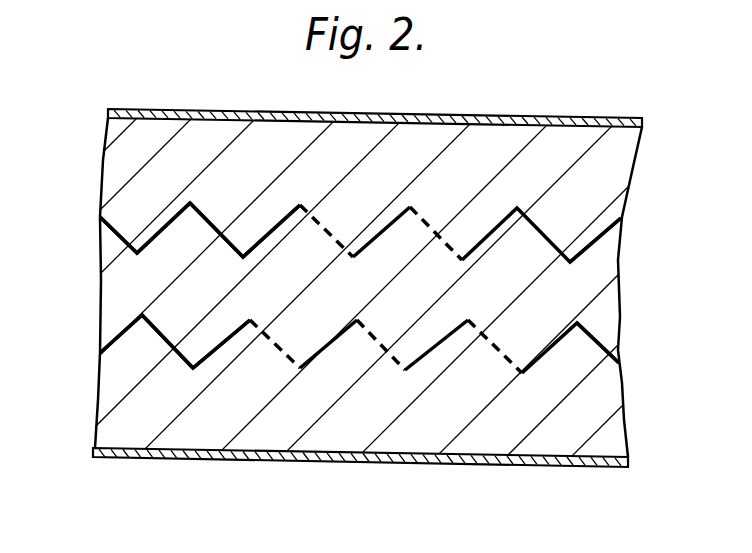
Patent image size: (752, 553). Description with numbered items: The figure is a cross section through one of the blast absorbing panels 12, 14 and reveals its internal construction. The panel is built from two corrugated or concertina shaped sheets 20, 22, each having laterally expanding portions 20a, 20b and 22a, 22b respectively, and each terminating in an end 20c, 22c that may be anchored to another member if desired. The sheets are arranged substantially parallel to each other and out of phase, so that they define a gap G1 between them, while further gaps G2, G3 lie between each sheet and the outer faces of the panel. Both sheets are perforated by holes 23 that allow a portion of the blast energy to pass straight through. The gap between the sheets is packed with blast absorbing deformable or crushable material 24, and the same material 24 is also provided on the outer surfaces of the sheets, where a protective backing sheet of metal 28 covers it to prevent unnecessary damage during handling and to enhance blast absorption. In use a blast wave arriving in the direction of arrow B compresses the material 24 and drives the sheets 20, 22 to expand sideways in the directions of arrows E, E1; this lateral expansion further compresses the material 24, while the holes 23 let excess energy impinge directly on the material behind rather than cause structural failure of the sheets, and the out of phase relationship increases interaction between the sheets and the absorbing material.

The panel 12 is at (367, 271).
The panel 14 is at (367, 271).
The corrugated or concertina shaped sheet 20 is at (403, 166).
The laterally expanding portion 20a is at (170, 215).
The laterally expanding portion 20b is at (207, 215).
The end 20c is at (598, 220).
The corrugated or concertina shaped sheet 22 is at (404, 415).
The laterally expanding portion 22a is at (168, 343).
The laterally expanding portion 22b is at (220, 347).
The end 22c is at (614, 362).
The holes 23 is at (478, 198).
The blast absorbing deformable or crushable material 24 is at (595, 178).
The protective backing sheet 28 is at (412, 110).
The gap G1 is at (117, 285).
The gap G2 is at (120, 172).
The gap G3 is at (120, 417).
The arrow E is at (335, 312).
The arrow E1 is at (492, 318).
The arrow B is at (394, 498).